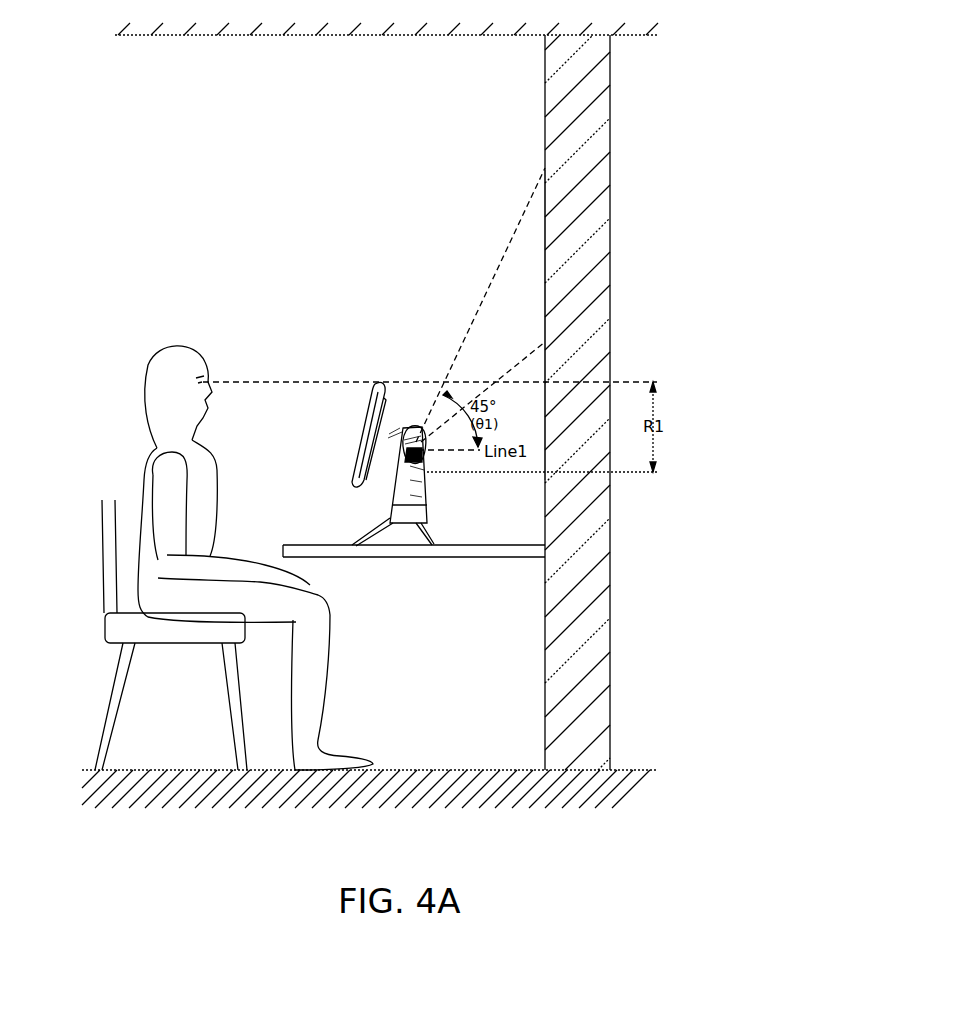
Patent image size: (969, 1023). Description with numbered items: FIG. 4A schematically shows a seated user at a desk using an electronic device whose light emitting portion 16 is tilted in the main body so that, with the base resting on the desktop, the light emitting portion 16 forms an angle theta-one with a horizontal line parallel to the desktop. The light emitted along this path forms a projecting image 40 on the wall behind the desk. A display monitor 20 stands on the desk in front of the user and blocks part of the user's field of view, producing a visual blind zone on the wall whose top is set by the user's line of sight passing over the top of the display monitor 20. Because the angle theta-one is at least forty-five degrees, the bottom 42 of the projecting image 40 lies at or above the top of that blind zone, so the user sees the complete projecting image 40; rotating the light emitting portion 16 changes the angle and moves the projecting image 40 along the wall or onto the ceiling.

The light emitting portion 16 is at (414, 428).
The display monitor 20 is at (387, 440).
The projecting image 40 is at (547, 250).
The bottom of the projecting image 42 is at (547, 347).